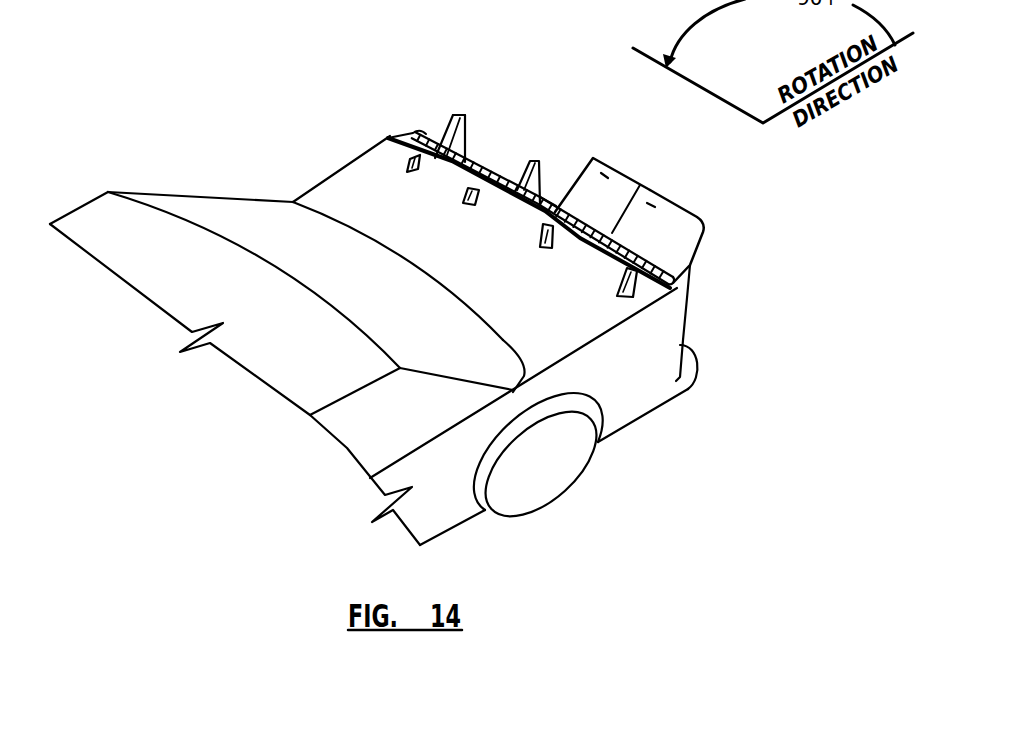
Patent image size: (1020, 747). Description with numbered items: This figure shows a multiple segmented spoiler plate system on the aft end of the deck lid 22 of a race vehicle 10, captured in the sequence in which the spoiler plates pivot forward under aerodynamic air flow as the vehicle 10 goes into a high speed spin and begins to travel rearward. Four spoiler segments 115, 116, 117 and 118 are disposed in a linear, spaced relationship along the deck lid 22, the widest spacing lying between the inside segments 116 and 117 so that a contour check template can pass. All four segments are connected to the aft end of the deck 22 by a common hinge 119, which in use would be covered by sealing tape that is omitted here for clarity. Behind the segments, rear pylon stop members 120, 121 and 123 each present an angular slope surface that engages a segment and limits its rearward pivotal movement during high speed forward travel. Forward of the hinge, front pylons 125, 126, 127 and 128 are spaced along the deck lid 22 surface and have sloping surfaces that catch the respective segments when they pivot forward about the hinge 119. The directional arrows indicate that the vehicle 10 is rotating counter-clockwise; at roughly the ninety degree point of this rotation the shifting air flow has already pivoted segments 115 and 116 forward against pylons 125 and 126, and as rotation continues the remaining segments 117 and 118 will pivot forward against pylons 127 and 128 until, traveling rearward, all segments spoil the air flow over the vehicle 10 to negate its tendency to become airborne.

The vehicle 10 is at (696, 367).
The deck lid 22 is at (398, 238).
The spoiler segment 115 is at (467, 165).
The spoiler segment 116 is at (539, 170).
The spoiler segment 117 is at (615, 165).
The spoiler segment 118 is at (665, 196).
The common hinge 119 is at (566, 255).
The rear pylon stop member 120 is at (465, 116).
The rear pylon stop member 121 is at (541, 181).
The rear pylon stop member 123 is at (690, 274).
The forward pylon 125 is at (407, 168).
The forward pylon 126 is at (463, 198).
The forward pylon 127 is at (540, 236).
The forward pylon 128 is at (618, 292).